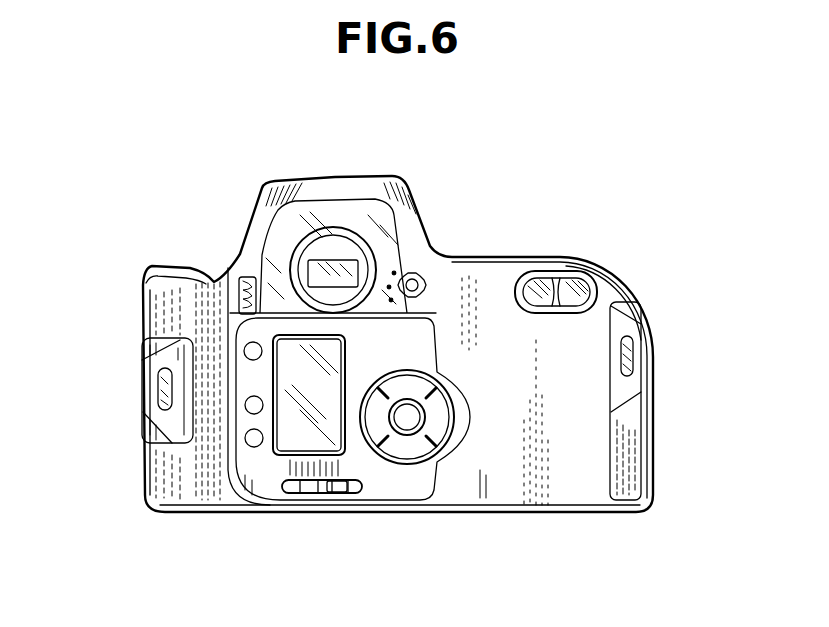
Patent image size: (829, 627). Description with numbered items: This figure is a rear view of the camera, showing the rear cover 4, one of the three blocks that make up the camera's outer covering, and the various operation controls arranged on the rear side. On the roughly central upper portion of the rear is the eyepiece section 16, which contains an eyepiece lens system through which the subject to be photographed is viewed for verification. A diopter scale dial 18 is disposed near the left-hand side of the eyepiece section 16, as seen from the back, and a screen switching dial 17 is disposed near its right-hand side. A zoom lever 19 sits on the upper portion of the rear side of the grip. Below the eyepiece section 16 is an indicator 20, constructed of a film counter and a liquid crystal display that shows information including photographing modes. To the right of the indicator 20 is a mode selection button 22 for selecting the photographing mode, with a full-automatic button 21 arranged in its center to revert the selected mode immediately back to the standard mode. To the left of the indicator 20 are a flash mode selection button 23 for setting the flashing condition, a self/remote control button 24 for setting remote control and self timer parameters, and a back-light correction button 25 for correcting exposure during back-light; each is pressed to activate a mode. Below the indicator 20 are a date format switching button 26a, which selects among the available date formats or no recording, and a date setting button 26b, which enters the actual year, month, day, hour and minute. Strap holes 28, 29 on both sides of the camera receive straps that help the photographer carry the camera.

The rear cover 4 is at (568, 488).
The eyepiece section 16 is at (343, 273).
The screen switching dial 17 is at (413, 285).
The diopter scale dial 18 is at (246, 281).
The zoom lever 19 is at (555, 274).
The indicator 20 is at (294, 428).
The full-automatic button 21 is at (412, 420).
The mode selection button 22 is at (407, 452).
The flash mode selection button 23 is at (251, 350).
The self/remote control button 24 is at (253, 407).
The back-light correction button 25 is at (253, 439).
The date format switching button 26a is at (311, 491).
The date setting button 26b is at (338, 491).
The strap hole 28 is at (635, 357).
The strap hole 29 is at (155, 388).